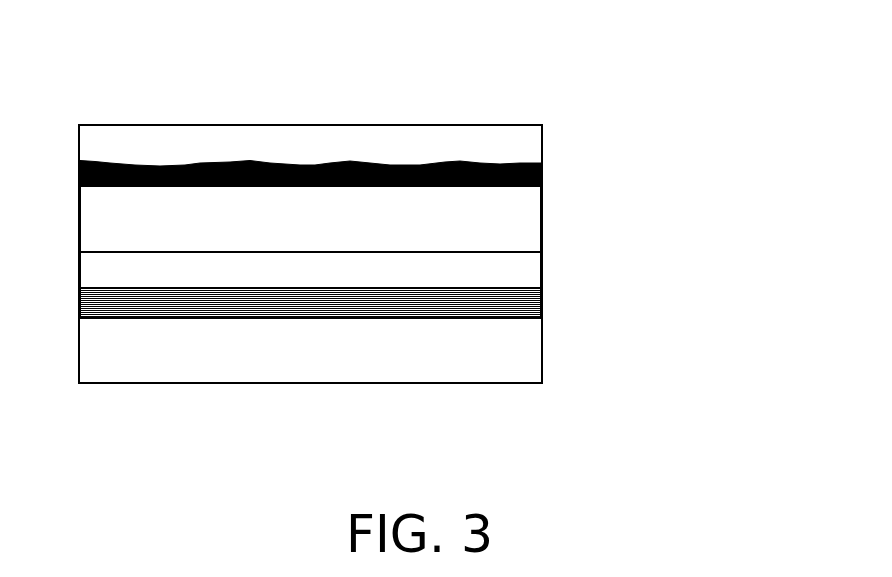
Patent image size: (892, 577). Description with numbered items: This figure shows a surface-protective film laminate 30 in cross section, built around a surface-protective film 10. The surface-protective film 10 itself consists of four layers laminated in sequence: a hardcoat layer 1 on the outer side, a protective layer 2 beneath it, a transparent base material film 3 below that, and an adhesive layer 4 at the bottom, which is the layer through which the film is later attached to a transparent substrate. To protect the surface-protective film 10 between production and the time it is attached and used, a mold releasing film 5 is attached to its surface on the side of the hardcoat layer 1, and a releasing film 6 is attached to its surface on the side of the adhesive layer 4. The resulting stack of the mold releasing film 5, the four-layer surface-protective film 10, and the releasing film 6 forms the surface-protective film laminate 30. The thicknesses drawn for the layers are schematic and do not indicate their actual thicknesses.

The surface-protective film laminate 30 is at (552, 70).
The surface-protective film 10 is at (434, 239).
The mold releasing film 5 is at (522, 133).
The hardcoat layer 1 is at (522, 170).
The protective layer 2 is at (523, 215).
The transparent base material film 3 is at (522, 267).
The adhesive layer 4 is at (394, 310).
The releasing film 6 is at (520, 363).